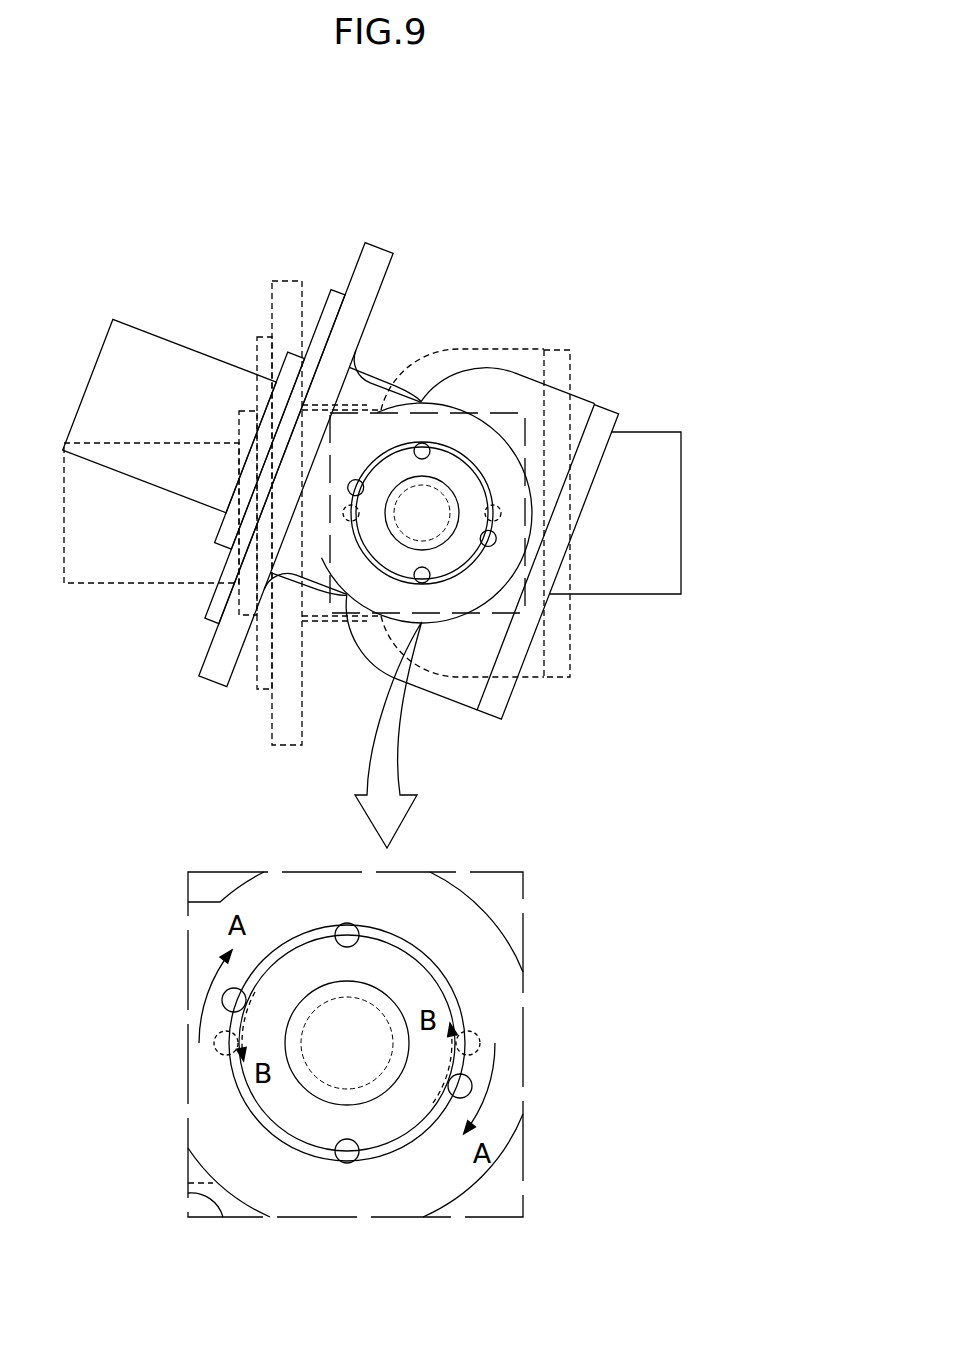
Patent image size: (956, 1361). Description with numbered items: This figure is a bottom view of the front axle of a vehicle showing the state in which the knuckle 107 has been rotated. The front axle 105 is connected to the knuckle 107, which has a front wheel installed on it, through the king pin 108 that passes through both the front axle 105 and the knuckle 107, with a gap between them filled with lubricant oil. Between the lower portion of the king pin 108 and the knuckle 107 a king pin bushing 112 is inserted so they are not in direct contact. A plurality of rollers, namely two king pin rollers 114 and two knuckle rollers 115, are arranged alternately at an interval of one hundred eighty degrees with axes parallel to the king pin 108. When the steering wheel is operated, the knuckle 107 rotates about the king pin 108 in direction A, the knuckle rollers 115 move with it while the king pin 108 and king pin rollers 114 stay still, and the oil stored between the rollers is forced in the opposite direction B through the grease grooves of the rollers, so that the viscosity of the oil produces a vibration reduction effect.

The front axle 105 is at (647, 453).
The knuckle 107 is at (173, 358).
The king pin 108 is at (383, 1120).
The king pin bushing 112 is at (428, 1127).
The king pin rollers 114 is at (342, 930).
The knuckle rollers 115 is at (233, 1000).